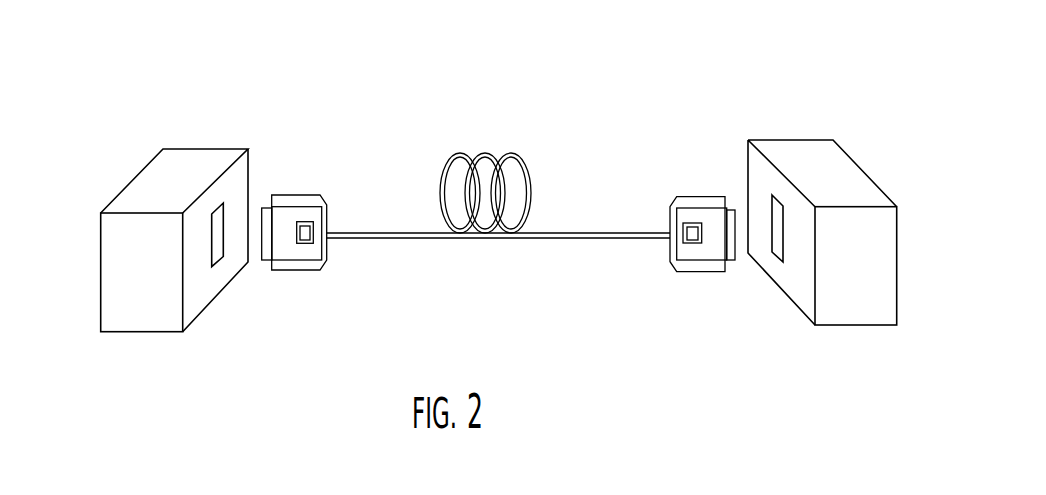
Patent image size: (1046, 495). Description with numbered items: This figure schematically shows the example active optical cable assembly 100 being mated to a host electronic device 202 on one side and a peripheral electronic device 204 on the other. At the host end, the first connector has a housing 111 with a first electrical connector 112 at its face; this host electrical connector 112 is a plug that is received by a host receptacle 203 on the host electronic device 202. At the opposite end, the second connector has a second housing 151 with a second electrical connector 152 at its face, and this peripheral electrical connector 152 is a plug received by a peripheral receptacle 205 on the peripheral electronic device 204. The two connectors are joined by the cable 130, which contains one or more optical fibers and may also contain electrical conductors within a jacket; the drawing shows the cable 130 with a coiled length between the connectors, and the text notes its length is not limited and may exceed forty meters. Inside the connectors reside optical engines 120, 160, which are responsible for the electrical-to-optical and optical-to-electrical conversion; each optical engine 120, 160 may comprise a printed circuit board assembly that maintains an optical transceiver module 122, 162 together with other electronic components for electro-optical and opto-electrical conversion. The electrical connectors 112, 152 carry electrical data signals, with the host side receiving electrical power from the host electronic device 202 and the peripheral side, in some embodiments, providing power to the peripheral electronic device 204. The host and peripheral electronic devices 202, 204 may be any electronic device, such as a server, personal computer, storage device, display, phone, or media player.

The active optical cable assembly 100 is at (417, 74).
The housing 111 is at (319, 273).
The first electrical connector 112 is at (263, 209).
The optical engine 120 is at (288, 249).
The optical transceiver module 122 is at (308, 217).
The cable 130 is at (435, 244).
The second housing 151 is at (676, 264).
The second electrical connector 152 is at (734, 208).
The optical engine 160 is at (708, 248).
The optical transceiver module 162 is at (686, 215).
The host electronic device 202 is at (118, 191).
The host receptacle 203 is at (222, 258).
The peripheral electronic device 204 is at (864, 170).
The peripheral receptacle 205 is at (782, 261).